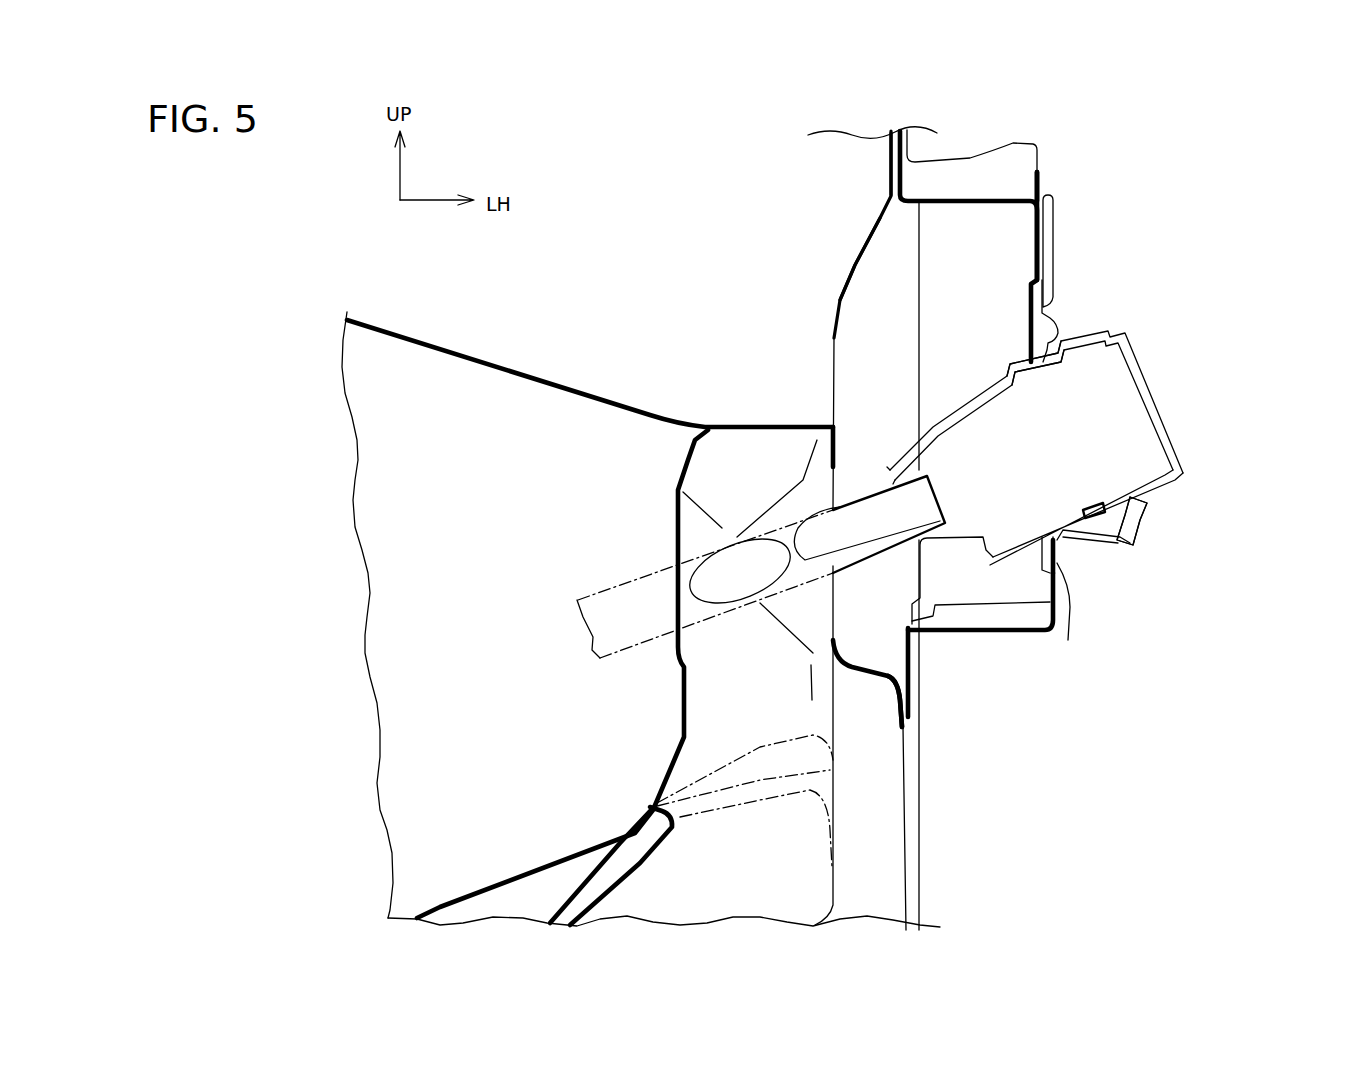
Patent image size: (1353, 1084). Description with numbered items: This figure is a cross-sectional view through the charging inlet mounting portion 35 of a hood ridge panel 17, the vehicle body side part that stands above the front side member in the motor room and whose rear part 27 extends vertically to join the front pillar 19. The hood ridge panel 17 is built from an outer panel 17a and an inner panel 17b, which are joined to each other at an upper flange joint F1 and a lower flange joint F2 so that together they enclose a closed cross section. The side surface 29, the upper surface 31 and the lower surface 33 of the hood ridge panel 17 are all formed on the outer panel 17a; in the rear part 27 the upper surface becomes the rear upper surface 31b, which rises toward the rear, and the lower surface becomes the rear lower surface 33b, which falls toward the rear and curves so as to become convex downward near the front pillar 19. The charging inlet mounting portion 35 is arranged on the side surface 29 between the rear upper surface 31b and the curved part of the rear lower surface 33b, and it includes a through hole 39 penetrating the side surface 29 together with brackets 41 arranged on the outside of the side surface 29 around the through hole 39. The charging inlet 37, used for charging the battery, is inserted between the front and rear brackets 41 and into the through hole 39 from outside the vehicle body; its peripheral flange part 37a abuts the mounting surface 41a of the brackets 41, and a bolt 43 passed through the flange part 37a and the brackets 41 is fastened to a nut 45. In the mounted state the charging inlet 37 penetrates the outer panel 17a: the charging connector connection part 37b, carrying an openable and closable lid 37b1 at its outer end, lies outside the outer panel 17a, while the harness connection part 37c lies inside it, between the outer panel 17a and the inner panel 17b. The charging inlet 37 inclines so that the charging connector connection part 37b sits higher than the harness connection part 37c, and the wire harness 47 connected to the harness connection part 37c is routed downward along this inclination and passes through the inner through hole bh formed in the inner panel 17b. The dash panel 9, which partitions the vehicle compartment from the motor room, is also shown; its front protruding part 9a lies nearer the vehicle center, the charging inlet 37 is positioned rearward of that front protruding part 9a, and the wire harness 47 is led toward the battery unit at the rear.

The dash panel 9 is at (641, 604).
The front protruding part 9a is at (482, 366).
The hood ridge panel 17 is at (917, 528).
The rear part 27 is at (1037, 150).
The inner through hole bh is at (839, 660).
The outer panel 17a is at (1044, 242).
The inner panel 17b is at (867, 240).
The front pillar 19 is at (921, 833).
The side surface 29 is at (1043, 180).
The upper surface 31 is at (972, 122).
The rear upper surface 31b is at (972, 170).
The lower surface 33 is at (993, 612).
The rear lower surface 33b is at (975, 632).
The charging inlet mounting portion 35 is at (1054, 317).
The charging inlet 37 is at (1070, 453).
The flange part 37a is at (1133, 500).
The charging connector connection part 37b is at (1163, 490).
The opening and closing lid 37b1 is at (1070, 453).
The harness connection part 37c is at (973, 410).
The through hole 39 is at (1065, 580).
The bracket 41 is at (1093, 533).
The mounting surface 41a is at (1100, 530).
The bolt 43 is at (1147, 507).
The nut 45 is at (1113, 517).
The wire harness 47 is at (620, 583).
The upper flange joint F1 is at (887, 173).
The lower flange joint F2 is at (906, 697).